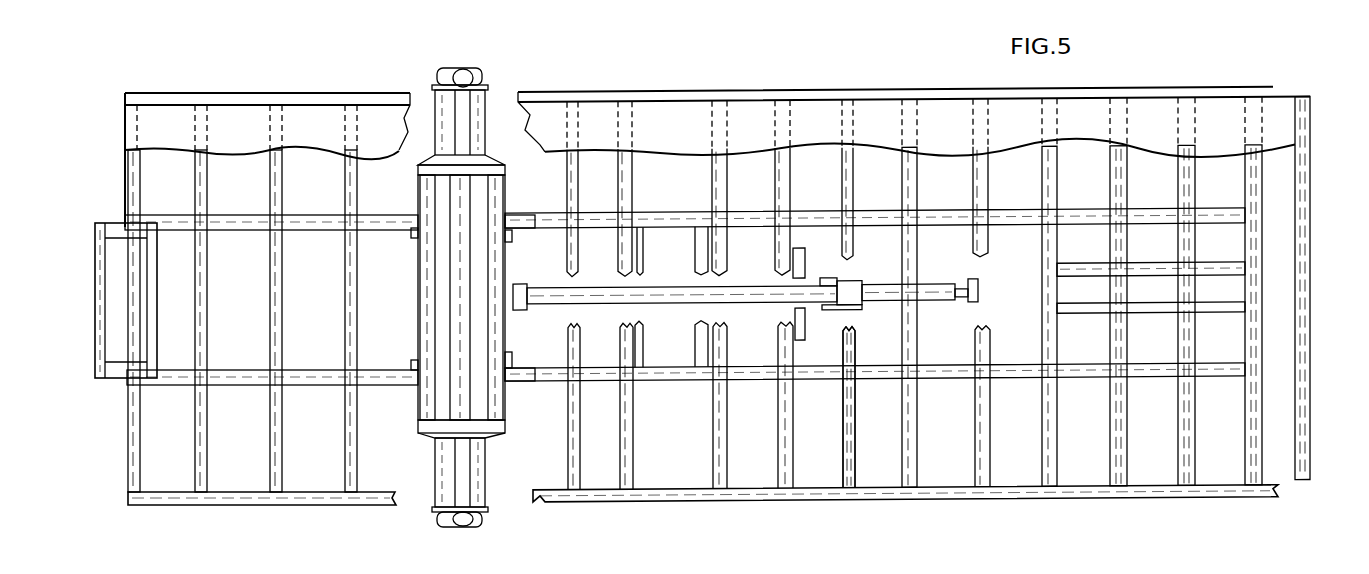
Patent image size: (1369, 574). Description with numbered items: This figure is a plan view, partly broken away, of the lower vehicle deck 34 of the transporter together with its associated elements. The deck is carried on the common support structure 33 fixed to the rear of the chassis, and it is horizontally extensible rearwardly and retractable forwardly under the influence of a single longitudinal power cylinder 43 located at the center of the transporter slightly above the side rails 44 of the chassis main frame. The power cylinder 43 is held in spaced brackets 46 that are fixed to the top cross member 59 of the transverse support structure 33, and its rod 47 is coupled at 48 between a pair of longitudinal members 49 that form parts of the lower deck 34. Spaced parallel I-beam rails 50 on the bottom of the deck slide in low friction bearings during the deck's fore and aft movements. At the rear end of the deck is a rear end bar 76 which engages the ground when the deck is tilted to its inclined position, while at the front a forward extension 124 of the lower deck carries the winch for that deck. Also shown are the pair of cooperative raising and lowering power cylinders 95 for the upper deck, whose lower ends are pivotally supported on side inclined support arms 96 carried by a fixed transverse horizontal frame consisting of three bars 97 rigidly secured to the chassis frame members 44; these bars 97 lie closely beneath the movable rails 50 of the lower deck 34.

The common support structure 33 is at (843, 405).
The lower vehicle deck 34 is at (882, 92).
The longitudinal power cylinder 43 is at (748, 305).
The side rails 44 is at (541, 196).
The brackets 46 is at (848, 283).
The rod 47 is at (962, 301).
The coupling 48 is at (979, 294).
The longitudinal members 49 is at (1072, 303).
The I-beam rails 50 is at (335, 233).
The top cross member 59 is at (856, 448).
The rear end bar 76 is at (1305, 400).
The raising and lowering power cylinders 95 is at (463, 70).
The side inclined support arms 96 is at (487, 97).
The bars 97 is at (490, 292).
The forward extension 124 is at (97, 312).